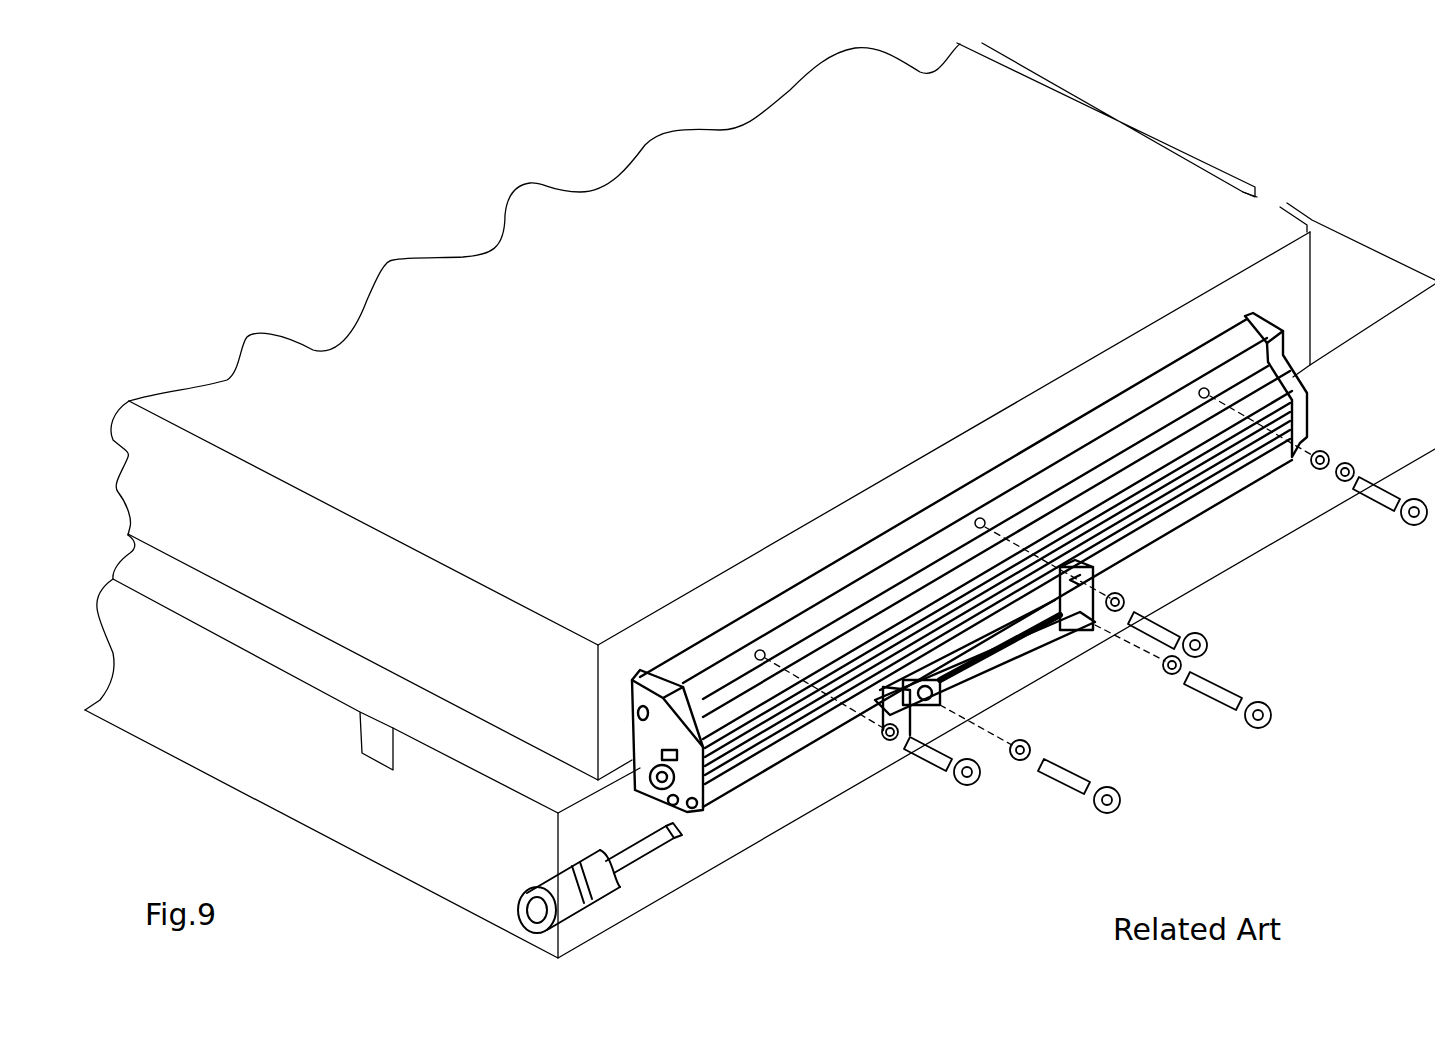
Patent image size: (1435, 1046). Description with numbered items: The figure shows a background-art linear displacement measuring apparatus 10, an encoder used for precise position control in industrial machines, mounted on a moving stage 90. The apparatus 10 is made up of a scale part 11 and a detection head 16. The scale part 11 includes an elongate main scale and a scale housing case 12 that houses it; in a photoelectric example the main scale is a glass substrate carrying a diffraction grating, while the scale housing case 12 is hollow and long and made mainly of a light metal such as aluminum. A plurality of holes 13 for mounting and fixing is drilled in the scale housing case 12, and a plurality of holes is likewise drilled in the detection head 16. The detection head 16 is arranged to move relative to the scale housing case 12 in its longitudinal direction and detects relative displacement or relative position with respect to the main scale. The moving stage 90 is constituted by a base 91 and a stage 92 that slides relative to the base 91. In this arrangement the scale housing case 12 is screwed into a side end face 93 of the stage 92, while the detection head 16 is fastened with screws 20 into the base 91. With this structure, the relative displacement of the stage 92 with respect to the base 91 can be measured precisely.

The linear displacement measuring apparatus 10 is at (994, 532).
The scale part 11 is at (1001, 483).
The scale housing case 12 is at (808, 573).
The holes 13 is at (760, 655).
The detection head 16 is at (1040, 662).
The screws 20 is at (1073, 773).
The moving stage 90 is at (773, 411).
The base 91 is at (257, 628).
The stage 92 is at (405, 528).
The side end face 93 is at (1232, 298).